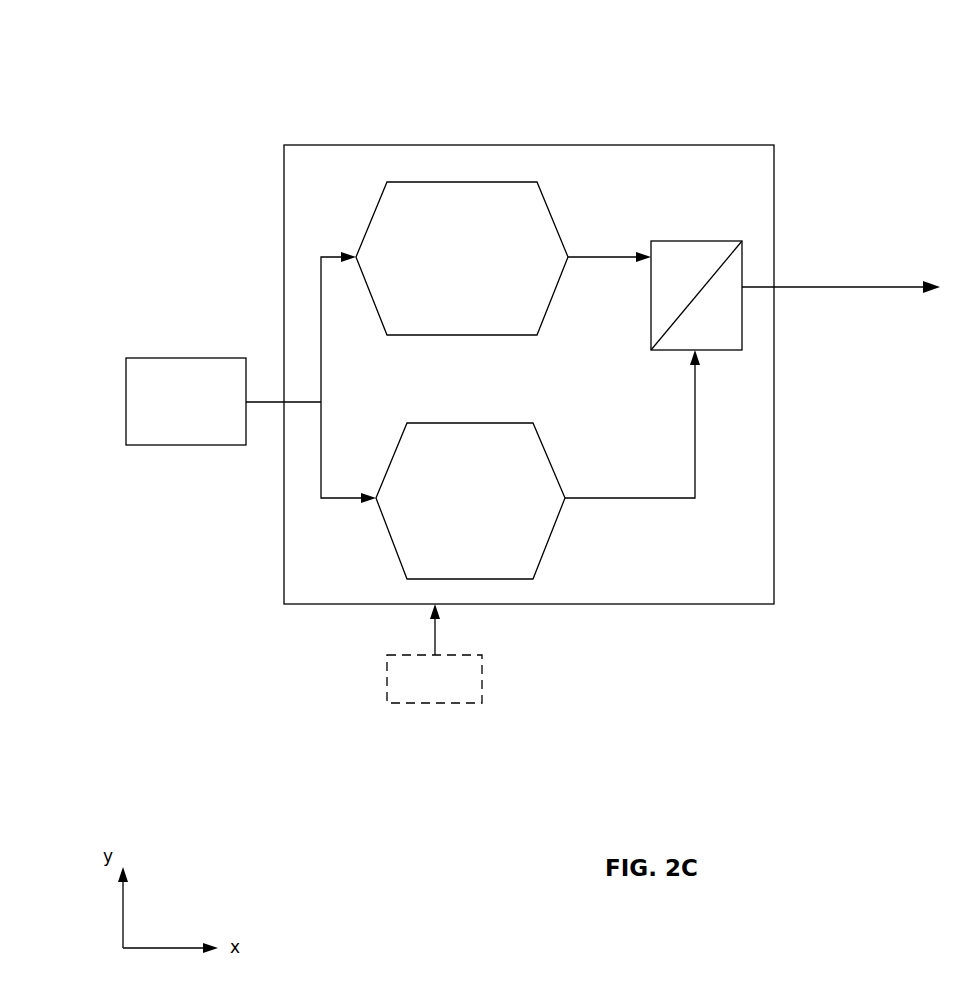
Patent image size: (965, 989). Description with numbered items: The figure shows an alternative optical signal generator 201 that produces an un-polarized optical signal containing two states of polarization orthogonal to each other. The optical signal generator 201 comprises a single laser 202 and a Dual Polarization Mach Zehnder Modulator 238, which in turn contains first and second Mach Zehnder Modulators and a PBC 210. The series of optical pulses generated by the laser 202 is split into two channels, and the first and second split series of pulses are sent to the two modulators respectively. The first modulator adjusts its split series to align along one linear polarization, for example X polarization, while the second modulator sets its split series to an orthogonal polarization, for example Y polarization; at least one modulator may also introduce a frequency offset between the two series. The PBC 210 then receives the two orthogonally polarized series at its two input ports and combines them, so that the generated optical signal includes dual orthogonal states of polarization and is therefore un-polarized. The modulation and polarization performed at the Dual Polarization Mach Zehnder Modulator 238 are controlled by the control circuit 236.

The optical signal generator 201 is at (146, 92).
The Dual Polarization Mach Zenhder Modulator 238 is at (480, 145).
The laser 202 is at (186, 358).
The PBC 210 is at (695, 241).
The control circuit 236 is at (473, 703).